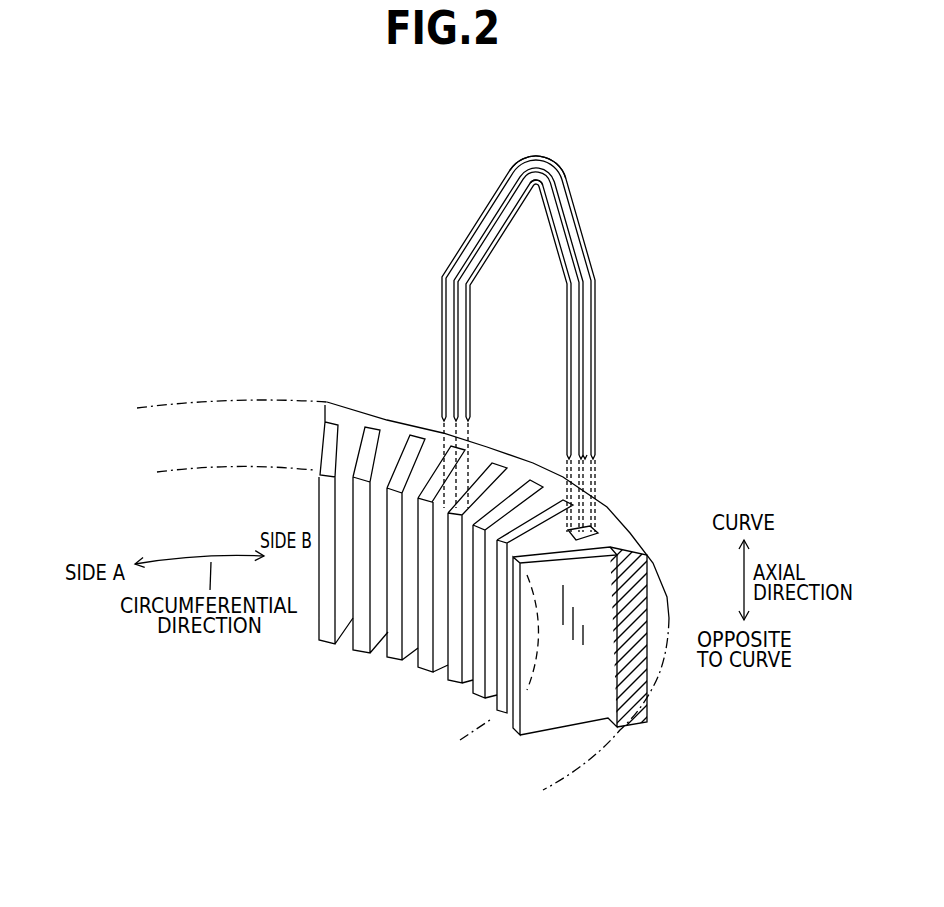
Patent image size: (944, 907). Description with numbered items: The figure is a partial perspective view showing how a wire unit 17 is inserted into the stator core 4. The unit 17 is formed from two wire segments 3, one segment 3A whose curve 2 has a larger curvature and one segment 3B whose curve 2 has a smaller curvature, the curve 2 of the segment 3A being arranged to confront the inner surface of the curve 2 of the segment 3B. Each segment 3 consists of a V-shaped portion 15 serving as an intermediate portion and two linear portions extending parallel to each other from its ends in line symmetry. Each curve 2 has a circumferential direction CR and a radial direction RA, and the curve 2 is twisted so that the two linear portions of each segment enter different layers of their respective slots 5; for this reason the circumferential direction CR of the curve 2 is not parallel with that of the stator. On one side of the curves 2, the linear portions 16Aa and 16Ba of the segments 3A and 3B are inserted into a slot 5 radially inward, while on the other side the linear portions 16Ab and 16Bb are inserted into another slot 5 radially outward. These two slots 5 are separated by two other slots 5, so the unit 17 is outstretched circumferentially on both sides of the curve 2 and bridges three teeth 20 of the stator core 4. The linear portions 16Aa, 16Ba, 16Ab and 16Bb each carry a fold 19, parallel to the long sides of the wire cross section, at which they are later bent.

The curve 2 is at (536, 216).
The wire segment 3 is at (527, 304).
The segment having the curve of a larger curvature 3A is at (480, 291).
The segment having the curve of a smaller curvature 3B is at (570, 156).
The stator core 4 is at (368, 404).
The slot 5 is at (481, 471).
The V-shaped portion 15 is at (587, 217).
The linear portion 16Aa is at (452, 313).
The linear portion 16Ba is at (441, 350).
The linear portion 16Ab is at (588, 338).
The linear portion 16Bb is at (590, 377).
The wire unit 17 is at (506, 149).
The fold 19 is at (593, 263).
The tooth 20 is at (499, 487).
The circumferential direction CR is at (566, 141).
The radial direction RA is at (582, 190).